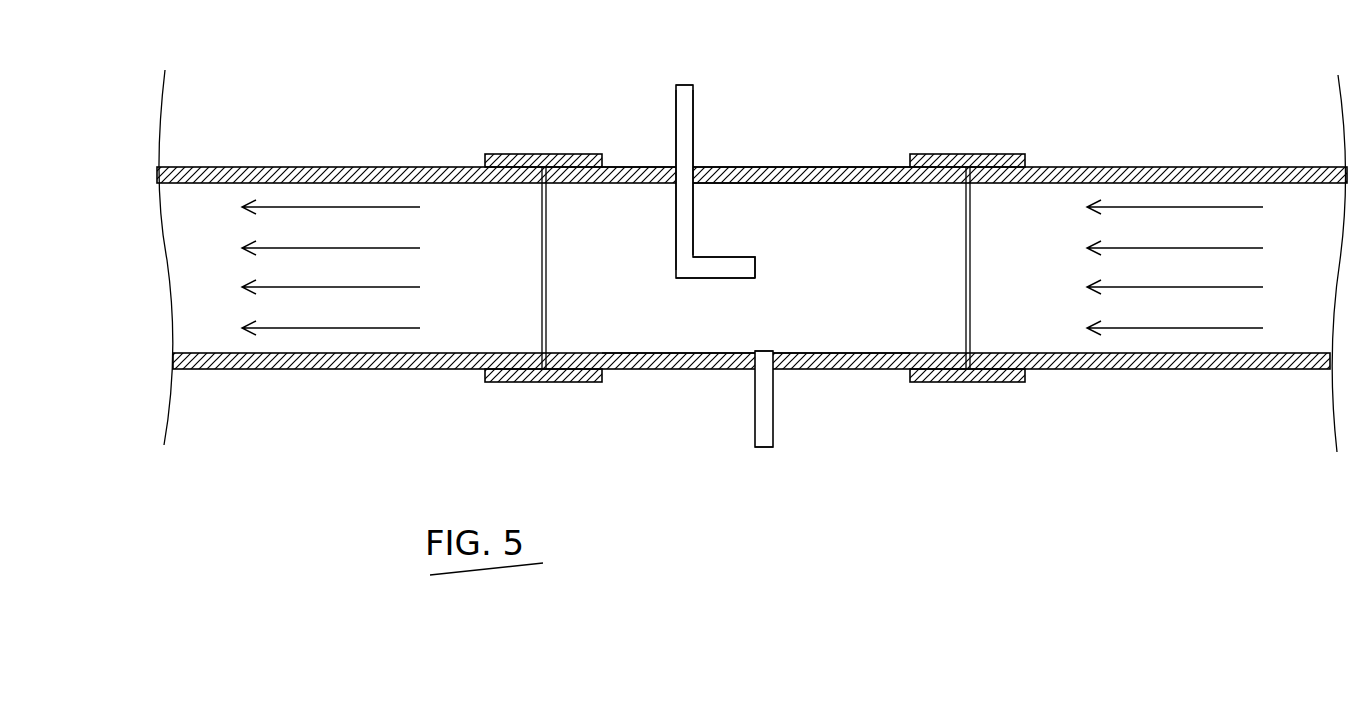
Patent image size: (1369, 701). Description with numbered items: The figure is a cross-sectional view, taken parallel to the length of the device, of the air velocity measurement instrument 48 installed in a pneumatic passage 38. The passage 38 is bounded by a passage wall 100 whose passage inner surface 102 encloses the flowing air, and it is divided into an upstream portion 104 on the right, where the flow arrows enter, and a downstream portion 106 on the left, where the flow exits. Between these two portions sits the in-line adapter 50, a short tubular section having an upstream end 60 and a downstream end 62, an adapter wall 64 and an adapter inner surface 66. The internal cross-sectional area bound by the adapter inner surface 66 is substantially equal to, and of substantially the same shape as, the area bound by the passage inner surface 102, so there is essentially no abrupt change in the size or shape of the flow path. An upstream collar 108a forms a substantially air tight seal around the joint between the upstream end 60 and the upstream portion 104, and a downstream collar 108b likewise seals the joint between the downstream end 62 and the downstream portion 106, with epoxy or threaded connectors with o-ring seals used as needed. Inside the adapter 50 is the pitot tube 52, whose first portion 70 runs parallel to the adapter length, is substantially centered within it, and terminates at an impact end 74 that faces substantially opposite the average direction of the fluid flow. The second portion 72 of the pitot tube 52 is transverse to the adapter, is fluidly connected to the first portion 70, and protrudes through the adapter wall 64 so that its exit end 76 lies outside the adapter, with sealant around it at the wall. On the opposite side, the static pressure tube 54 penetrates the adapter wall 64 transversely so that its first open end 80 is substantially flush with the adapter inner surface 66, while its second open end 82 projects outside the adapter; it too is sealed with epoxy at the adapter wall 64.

The passage 38 is at (393, 112).
The air velocity measurement instrument 48 is at (873, 88).
The in-line adapter 50 is at (786, 158).
The pitot tube 52 is at (717, 180).
The static pressure tube 54 is at (786, 400).
The upstream end 60 is at (965, 268).
The downstream end 62 is at (547, 280).
The adapter wall 64 is at (868, 184).
The adapter inner surface 66 is at (595, 192).
The first portion 70 is at (710, 280).
The second portion 72 is at (676, 110).
The impact end 74 is at (756, 266).
The exit end 76 is at (688, 85).
The first open end 80 is at (764, 351).
The second open end 82 is at (764, 447).
The passage wall 100 is at (300, 167).
The passage inner surface 102 is at (433, 192).
The upstream portion 104 is at (1052, 287).
The downstream portion 106 is at (505, 291).
The upstream collar 108a is at (958, 154).
The downstream collar 108b is at (510, 154).